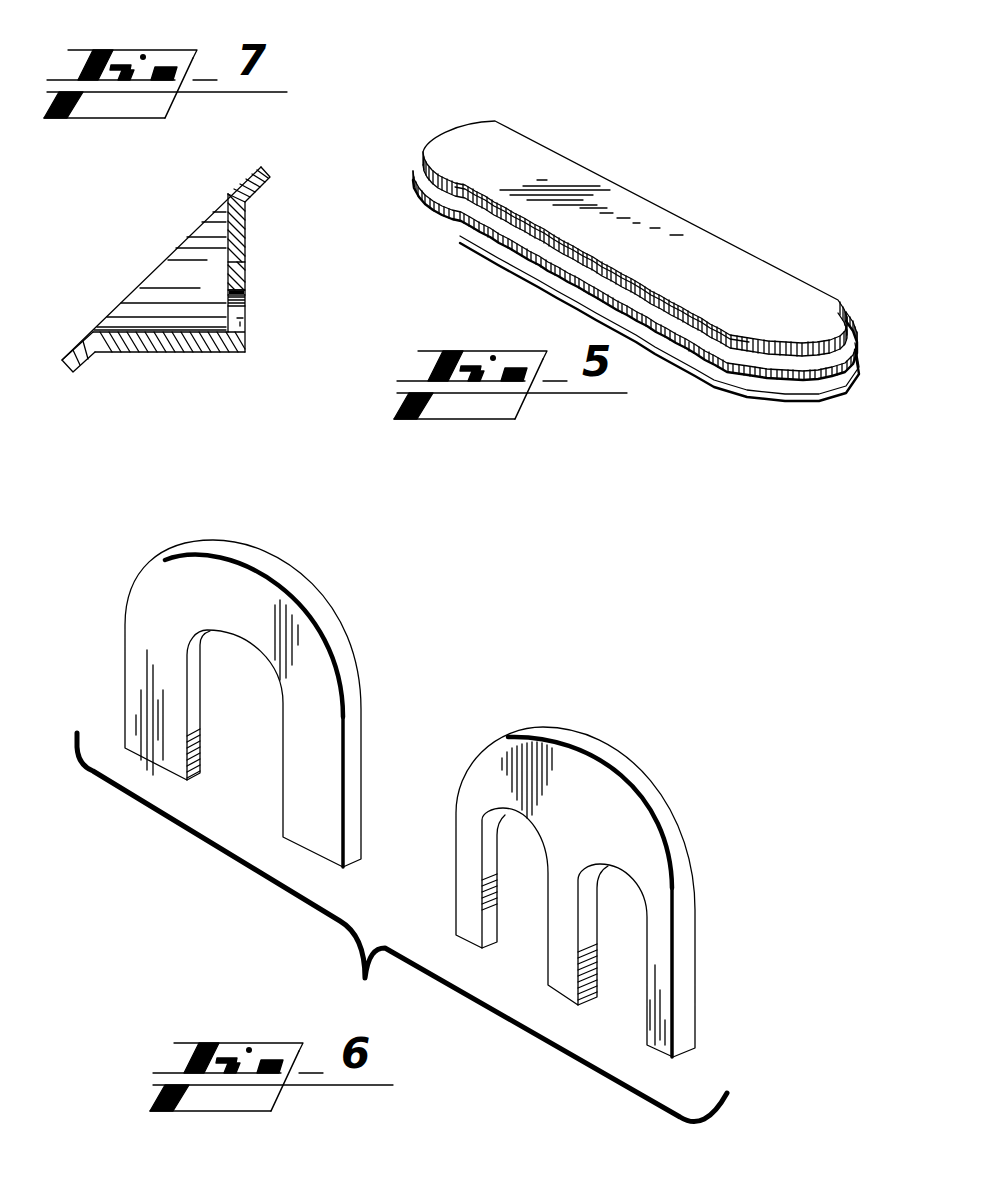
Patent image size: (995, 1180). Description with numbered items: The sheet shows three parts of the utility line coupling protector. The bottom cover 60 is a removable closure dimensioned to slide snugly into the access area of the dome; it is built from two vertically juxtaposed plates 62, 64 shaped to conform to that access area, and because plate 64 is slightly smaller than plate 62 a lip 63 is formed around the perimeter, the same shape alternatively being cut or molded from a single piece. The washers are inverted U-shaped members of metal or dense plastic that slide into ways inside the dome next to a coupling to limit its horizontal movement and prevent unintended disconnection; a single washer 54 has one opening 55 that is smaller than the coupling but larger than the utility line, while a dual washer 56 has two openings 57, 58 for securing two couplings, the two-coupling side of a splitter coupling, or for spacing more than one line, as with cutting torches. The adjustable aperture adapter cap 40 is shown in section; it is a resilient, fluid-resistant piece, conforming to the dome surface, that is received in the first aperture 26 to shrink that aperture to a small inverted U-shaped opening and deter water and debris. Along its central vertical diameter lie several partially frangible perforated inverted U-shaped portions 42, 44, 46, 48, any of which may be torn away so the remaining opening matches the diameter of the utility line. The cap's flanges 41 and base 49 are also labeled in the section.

In FIG. 7, the first aperture 26 is at (242, 318).
In FIG. 7, the adjustable aperture adapter cap 40 is at (209, 290).
In FIG. 7, the flange 41 is at (248, 200).
In FIG. 7, the perforated inverted U-shaped portion 42 is at (247, 223).
In FIG. 7, the perforated inverted U-shaped portion 44 is at (278, 258).
In FIG. 7, the perforated inverted U-shaped portion 46 is at (246, 288).
In FIG. 7, the perforated inverted U-shaped portion 48 is at (246, 296).
In FIG. 7, the base flange 49 is at (147, 354).
In FIG. 6, the washer 54 is at (219, 703).
In FIG. 6, the opening 55 is at (232, 728).
In FIG. 6, the dual washer 56 is at (589, 851).
In FIG. 6, the opening 57 is at (628, 982).
In FIG. 6, the opening 58 is at (515, 927).
In FIG. 5, the bottom cover 60 is at (641, 315).
In FIG. 5, the plate 62 is at (820, 366).
In FIG. 5, the lip 63 is at (762, 363).
In FIG. 5, the plate 64 is at (749, 270).